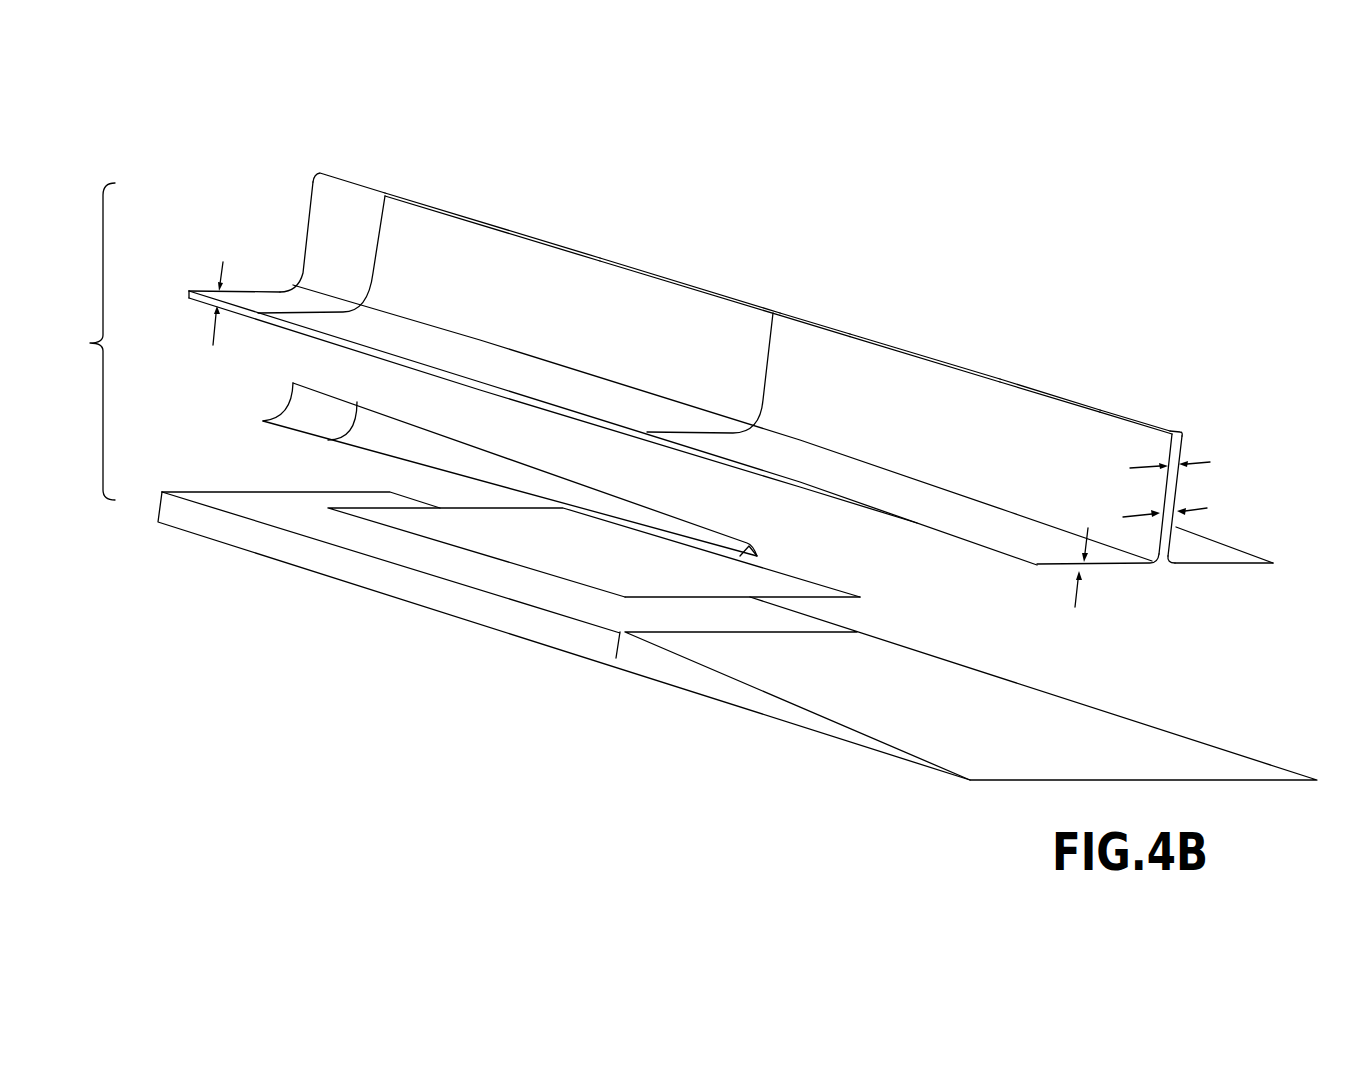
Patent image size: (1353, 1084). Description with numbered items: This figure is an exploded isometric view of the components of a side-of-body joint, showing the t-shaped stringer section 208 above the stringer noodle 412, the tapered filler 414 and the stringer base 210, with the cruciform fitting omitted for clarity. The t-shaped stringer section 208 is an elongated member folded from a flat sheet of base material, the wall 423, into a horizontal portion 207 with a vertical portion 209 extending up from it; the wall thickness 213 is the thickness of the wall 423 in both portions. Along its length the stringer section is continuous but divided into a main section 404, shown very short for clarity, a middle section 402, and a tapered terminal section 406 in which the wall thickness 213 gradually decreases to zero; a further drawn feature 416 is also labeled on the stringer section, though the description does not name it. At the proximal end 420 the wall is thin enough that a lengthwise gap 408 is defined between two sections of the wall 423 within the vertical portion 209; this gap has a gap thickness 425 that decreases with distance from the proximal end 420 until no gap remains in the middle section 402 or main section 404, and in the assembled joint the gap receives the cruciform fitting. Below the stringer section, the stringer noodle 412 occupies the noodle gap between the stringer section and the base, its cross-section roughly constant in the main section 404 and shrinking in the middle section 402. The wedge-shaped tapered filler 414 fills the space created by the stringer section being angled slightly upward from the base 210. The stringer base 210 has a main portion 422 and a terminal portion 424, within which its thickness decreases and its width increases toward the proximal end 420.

The horizontal portion 207 is at (1207, 562).
The t-shaped stringer section 208 is at (532, 252).
The vertical portion 209 is at (1143, 423).
The stringer base 210 is at (302, 568).
The wall thickness 213 is at (207, 302).
The middle section 402 is at (703, 293).
The main section 404 is at (363, 189).
The terminal section 406 is at (915, 351).
The lengthwise gap 408 is at (1177, 485).
The stringer noodle 412 is at (262, 421).
The tapered filler 414 is at (473, 553).
The second tab 416 is at (775, 333).
The proximal end 420 is at (1178, 430).
The main portion 422 is at (547, 640).
The wall 423 is at (1262, 564).
The terminal portion 424 is at (753, 708).
The gap thickness 425 is at (1172, 512).